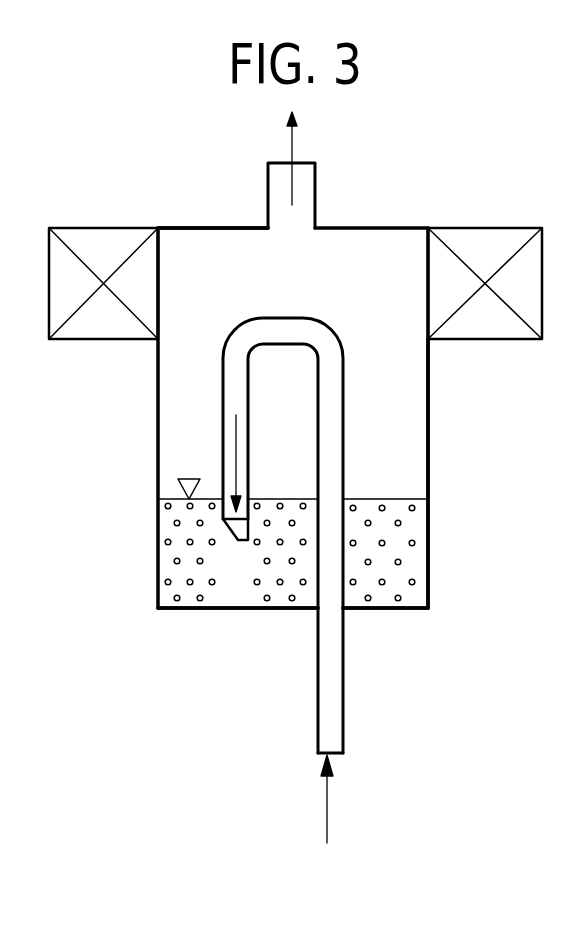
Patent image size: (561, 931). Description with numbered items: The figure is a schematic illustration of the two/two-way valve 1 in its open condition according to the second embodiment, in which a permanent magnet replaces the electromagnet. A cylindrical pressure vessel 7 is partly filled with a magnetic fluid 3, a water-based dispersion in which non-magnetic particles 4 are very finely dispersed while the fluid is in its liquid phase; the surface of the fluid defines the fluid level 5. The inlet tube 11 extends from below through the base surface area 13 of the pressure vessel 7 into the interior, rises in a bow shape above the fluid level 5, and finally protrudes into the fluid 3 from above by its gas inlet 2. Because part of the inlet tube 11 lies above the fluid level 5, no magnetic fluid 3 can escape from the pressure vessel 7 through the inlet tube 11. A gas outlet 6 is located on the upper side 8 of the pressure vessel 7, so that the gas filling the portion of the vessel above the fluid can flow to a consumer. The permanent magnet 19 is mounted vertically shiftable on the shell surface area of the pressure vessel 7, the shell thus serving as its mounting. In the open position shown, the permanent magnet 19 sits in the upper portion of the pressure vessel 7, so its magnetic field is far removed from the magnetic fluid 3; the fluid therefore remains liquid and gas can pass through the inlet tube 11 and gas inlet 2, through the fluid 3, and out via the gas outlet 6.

The valve 1 is at (404, 226).
The gas inlet 2 is at (240, 541).
The magnetic fluid 3 is at (412, 562).
The non-magnetic particles 4 is at (208, 597).
The fluid level 5 is at (173, 498).
The gas outlet 6 is at (316, 196).
The pressure vessel 7 is at (432, 414).
The upper side 8 is at (235, 226).
The inlet tube 11 is at (345, 410).
The base surface area 13 is at (373, 613).
The permanent magnet 19 is at (500, 245).